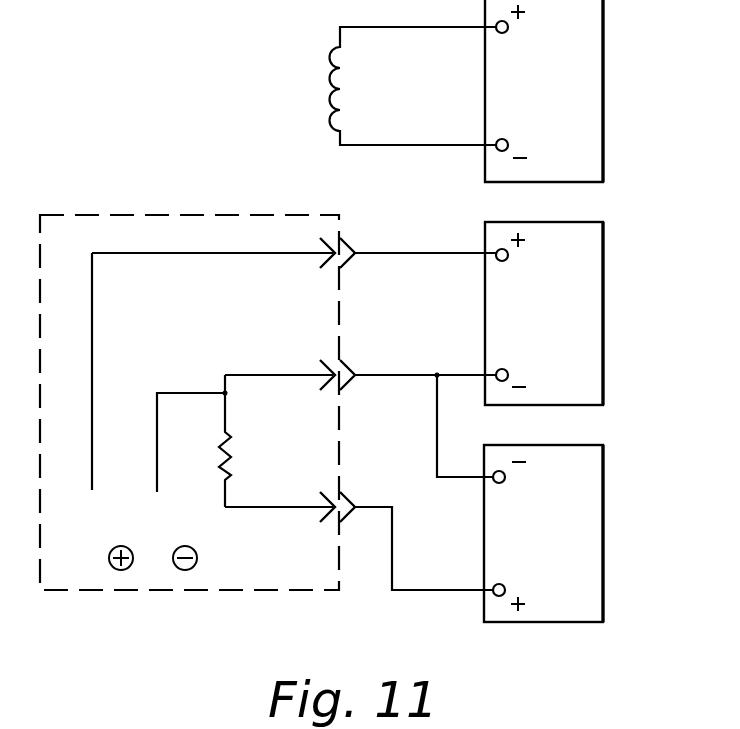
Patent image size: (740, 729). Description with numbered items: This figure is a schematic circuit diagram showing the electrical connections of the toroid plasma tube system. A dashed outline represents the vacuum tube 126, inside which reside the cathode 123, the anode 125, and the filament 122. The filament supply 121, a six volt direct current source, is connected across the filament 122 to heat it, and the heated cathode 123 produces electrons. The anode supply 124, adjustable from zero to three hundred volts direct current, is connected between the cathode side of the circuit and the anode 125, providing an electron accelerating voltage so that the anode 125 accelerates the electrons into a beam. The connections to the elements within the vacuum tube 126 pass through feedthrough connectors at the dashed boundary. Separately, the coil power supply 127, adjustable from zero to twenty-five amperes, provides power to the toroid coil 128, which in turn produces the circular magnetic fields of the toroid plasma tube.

The filament supply 121 is at (604, 566).
The filament 122 is at (234, 452).
The cathode 123 is at (160, 478).
The anode supply 124 is at (604, 328).
The anode 125 is at (95, 472).
The vacuum tube 126 is at (212, 591).
The coil power supply 127 is at (605, 158).
The toroid coil 128 is at (338, 133).